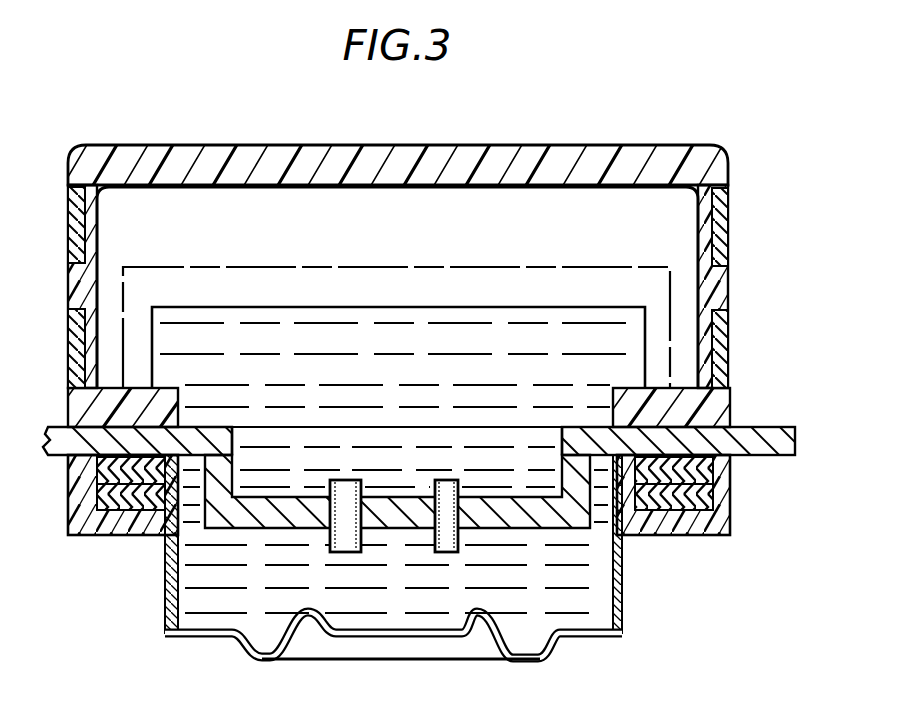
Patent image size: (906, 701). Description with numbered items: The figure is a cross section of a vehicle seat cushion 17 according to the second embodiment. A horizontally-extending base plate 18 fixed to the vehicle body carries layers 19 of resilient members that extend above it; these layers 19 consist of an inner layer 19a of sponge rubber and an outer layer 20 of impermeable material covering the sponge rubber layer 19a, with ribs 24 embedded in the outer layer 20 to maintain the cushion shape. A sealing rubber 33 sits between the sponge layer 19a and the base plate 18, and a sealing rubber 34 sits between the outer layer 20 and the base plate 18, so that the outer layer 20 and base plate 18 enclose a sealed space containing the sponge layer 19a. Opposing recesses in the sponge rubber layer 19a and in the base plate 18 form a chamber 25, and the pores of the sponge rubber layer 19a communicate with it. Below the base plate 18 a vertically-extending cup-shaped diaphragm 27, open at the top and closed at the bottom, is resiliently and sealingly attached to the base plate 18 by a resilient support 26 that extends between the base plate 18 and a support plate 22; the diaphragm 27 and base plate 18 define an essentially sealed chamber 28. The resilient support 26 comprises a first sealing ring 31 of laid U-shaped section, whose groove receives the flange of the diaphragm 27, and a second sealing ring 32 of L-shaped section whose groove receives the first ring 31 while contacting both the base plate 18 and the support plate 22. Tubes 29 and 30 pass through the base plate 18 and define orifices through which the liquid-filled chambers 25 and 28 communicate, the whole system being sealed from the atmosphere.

The seat cushion 17 is at (78, 140).
The base plate 18 is at (786, 442).
The layers of resilient members 19 is at (798, 200).
The sponge rubber layer 19a is at (678, 228).
The outer layer 20 is at (702, 279).
The support plate 22 is at (705, 531).
The ribs 24 is at (729, 204).
The chamber 25 is at (623, 327).
The resilient support 26 is at (806, 463).
The cup-shaped diaphragm 27 is at (622, 598).
The chamber 28 is at (597, 612).
The tube 29 is at (331, 482).
The tube 30 is at (459, 481).
The first sealing ring 31 is at (728, 480).
The second sealing ring 32 is at (728, 498).
The sealing rubber 33 is at (632, 387).
The sealing rubber 34 is at (722, 417).